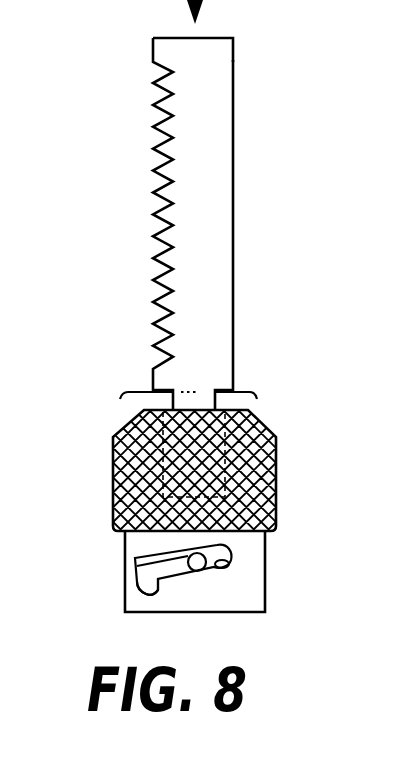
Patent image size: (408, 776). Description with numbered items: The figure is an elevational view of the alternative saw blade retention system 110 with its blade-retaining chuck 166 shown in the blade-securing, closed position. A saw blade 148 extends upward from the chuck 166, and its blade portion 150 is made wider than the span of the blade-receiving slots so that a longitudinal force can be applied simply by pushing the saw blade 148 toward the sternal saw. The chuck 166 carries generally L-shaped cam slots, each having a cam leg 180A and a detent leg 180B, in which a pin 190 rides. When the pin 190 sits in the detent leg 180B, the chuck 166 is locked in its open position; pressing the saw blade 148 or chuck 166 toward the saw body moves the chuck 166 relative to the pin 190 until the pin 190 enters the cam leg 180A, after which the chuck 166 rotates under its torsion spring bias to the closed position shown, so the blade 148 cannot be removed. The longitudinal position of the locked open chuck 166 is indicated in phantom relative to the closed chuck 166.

The saw blade retention system 110 is at (283, 355).
The saw blade 148 is at (236, 92).
The blade portion 150 is at (220, 163).
The blade-retaining chuck 166 is at (275, 433).
The pin 190 is at (136, 565).
The cam leg 180A is at (229, 563).
The detent leg 180B is at (138, 578).